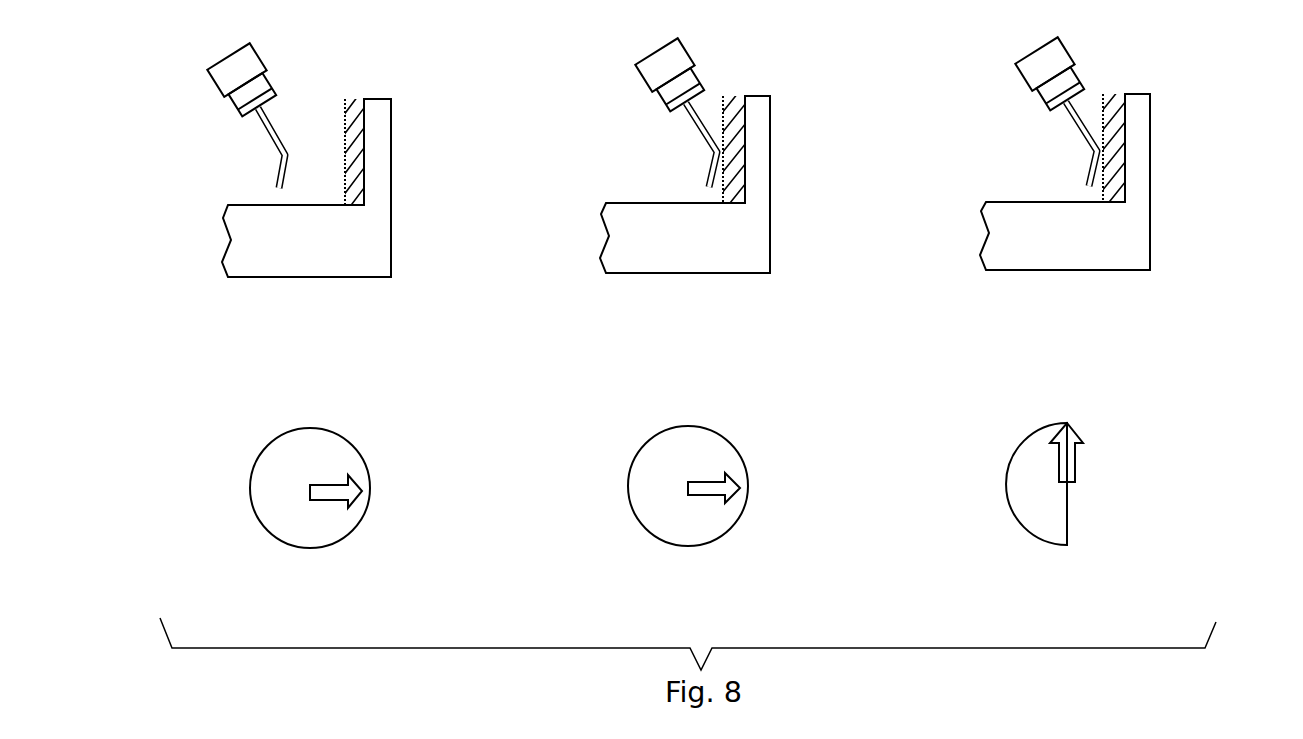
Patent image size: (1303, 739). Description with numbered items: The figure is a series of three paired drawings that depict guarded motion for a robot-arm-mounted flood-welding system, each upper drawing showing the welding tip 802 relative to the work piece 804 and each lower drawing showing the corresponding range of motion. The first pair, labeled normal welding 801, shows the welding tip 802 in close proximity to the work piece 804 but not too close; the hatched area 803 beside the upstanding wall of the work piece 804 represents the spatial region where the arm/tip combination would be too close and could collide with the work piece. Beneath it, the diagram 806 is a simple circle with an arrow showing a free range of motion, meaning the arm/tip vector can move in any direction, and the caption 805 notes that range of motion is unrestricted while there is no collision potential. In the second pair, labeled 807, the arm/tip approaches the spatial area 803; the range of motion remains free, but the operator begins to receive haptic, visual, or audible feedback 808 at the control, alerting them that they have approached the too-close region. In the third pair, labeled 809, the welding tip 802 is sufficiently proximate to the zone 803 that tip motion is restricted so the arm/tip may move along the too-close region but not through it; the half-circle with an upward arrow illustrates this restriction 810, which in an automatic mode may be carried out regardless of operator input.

The normal welding state 801 is at (308, 196).
The welding tip 802 is at (231, 108).
The too close area 803 is at (335, 103).
The work piece 804 is at (331, 188).
The free range of motion 805 is at (303, 523).
The range of motion diagram 806 is at (277, 488).
The welder tip/arm approaches too close region state 807 is at (686, 206).
The haptic/visual/audible feedback 808 is at (692, 521).
The welder tip/arm allowed to move along too close region state 809 is at (1079, 214).
The restriction 810 is at (1073, 533).